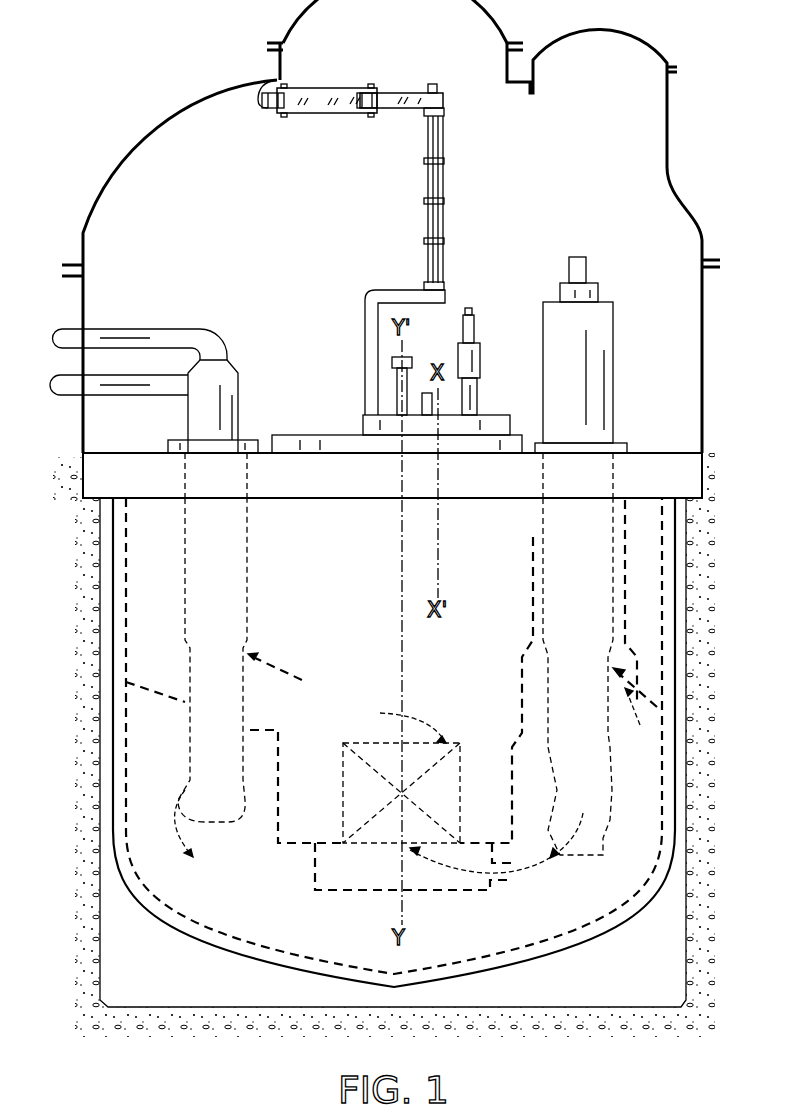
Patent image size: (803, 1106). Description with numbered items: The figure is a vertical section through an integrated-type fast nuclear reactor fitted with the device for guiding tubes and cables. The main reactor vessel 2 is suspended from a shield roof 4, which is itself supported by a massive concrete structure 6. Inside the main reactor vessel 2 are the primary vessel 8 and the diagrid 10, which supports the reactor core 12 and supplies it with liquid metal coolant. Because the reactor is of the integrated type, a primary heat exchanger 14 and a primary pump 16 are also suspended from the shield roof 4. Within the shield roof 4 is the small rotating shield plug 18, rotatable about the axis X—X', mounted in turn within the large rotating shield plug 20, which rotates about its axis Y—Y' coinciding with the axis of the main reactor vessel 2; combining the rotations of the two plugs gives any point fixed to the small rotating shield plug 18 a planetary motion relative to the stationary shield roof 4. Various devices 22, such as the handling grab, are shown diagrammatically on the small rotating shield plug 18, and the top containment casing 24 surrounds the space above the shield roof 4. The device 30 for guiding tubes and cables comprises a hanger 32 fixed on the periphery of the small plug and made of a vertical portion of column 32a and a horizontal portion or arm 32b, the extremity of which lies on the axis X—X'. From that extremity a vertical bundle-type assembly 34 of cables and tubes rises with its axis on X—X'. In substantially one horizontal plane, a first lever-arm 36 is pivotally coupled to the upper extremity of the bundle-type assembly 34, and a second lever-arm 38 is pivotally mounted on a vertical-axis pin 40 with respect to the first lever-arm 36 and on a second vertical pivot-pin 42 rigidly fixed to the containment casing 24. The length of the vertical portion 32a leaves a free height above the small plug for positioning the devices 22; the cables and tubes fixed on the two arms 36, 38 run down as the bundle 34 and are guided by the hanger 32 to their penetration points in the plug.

The main reactor vessel 2 is at (213, 948).
The shield roof 4 is at (645, 470).
The concrete structure 6 is at (690, 945).
The primary vessel 8 is at (250, 728).
The diagrid 10 is at (315, 885).
The reactor core 12 is at (460, 775).
The primary heat exchanger 14 is at (247, 583).
The primary pump 16 is at (605, 350).
The small rotating shield plug 18 is at (365, 425).
The large rotating shield plug 20 is at (300, 440).
The devices 22 is at (472, 358).
The top containment casing 24 is at (150, 128).
The device for guiding tubes and cables 30 is at (407, 261).
The hanger 32 is at (362, 317).
The vertical portion of column 32a is at (370, 340).
The horizontal portion or arm 32b is at (395, 290).
The bundle-type assembly 34 is at (444, 203).
The first lever-arm 36 is at (405, 98).
The second lever-arm 38 is at (328, 94).
The pin 40 is at (370, 115).
The second vertical pivot-pin 42 is at (275, 115).